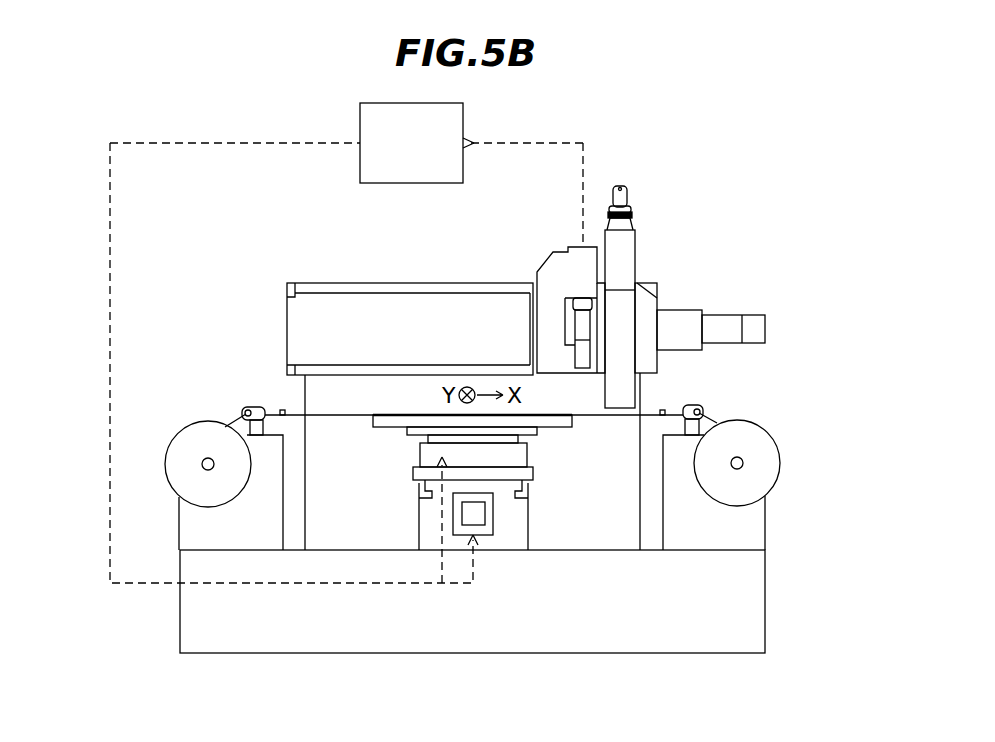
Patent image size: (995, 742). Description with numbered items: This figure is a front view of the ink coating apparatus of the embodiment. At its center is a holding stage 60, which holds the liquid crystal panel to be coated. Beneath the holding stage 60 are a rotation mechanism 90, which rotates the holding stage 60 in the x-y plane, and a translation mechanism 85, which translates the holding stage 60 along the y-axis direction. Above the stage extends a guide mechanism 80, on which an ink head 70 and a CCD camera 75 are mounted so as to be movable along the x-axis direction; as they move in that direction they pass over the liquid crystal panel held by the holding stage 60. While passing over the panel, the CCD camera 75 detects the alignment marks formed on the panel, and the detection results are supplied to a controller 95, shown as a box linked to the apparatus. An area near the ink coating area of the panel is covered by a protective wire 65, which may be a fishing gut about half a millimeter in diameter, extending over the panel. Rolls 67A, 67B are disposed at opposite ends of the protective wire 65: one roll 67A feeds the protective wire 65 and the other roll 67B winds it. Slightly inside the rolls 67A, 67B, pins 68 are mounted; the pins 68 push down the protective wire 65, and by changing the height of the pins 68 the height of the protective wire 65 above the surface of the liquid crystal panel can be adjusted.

The controller 95 is at (443, 183).
The guide mechanism 80 is at (350, 283).
The ink head 70 is at (604, 392).
The CCD camera 75 is at (592, 350).
The holding stage 60 is at (572, 420).
The rotation mechanism 90 is at (418, 452).
The translation mechanism 85 is at (410, 485).
The protective wire 65 is at (326, 417).
The pins 68 is at (280, 409).
The roll 67A is at (769, 433).
The roll 67B is at (178, 433).